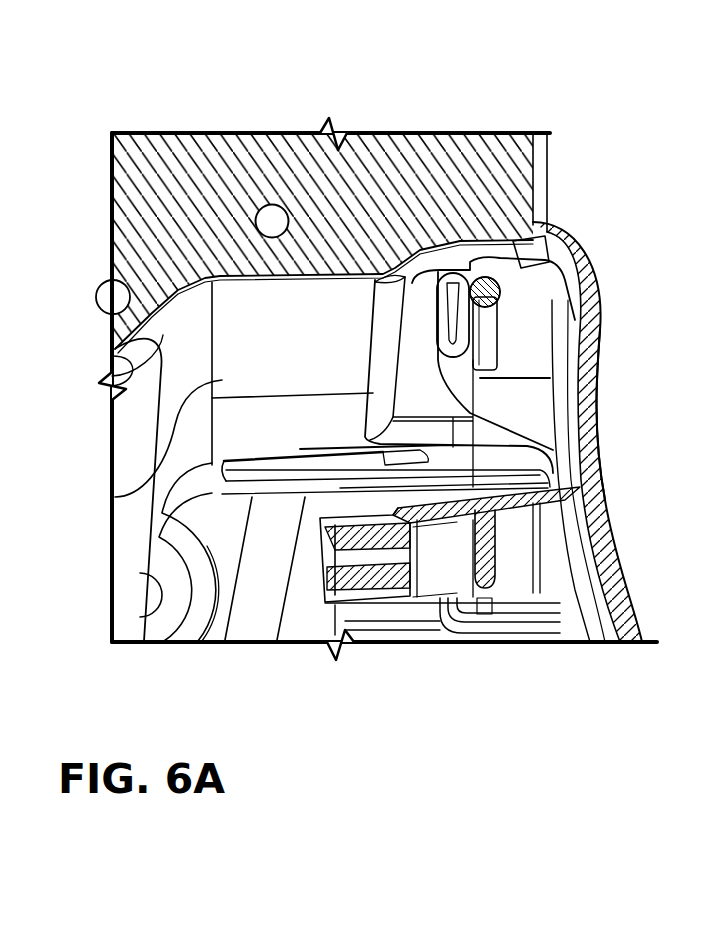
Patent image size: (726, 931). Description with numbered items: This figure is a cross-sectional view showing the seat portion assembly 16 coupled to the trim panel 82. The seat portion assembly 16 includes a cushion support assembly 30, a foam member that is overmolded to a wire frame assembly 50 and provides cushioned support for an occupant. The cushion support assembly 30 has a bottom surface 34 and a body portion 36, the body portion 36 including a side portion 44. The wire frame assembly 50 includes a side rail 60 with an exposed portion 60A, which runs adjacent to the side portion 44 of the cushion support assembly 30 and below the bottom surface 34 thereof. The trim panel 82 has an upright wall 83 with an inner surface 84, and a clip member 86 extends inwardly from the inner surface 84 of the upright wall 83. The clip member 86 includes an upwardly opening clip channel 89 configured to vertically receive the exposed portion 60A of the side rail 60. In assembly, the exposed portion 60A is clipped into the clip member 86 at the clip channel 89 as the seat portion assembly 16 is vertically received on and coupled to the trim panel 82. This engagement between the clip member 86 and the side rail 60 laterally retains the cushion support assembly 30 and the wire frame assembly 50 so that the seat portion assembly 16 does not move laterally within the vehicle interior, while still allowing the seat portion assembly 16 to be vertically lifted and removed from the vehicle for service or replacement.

The seat portion assembly 16 is at (586, 112).
The cushion support assembly 30 is at (397, 174).
The bottom surface 34 is at (248, 345).
The body portion 36 is at (456, 186).
The second side 44 is at (535, 247).
The wire frame assembly 50 is at (272, 204).
The second side rail 60 is at (501, 291).
The exposed portion of side rail 60A is at (492, 279).
The trim panel 82 is at (598, 408).
The upright wall 83 is at (603, 456).
The inner surface 84 is at (590, 580).
The clip member 86 is at (540, 322).
The upwardly opening clip channel 89 is at (490, 326).